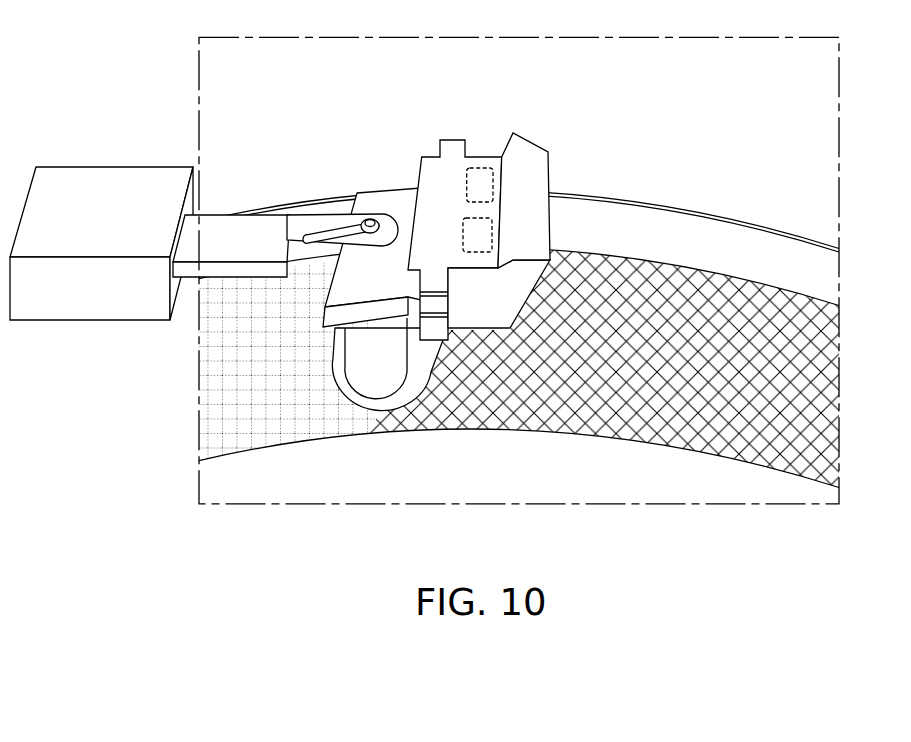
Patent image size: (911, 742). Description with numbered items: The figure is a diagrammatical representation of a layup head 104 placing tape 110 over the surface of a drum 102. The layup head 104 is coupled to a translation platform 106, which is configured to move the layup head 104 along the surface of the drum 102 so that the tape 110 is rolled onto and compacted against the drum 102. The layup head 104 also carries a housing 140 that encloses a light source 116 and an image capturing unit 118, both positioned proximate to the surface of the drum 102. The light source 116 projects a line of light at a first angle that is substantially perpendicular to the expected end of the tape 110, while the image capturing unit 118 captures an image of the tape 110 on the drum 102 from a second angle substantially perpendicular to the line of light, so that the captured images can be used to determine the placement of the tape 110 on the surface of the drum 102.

The drum 102 is at (707, 223).
The layup head 104 is at (374, 176).
The translation platform 106 is at (100, 165).
The tape 110 is at (200, 405).
The light source 116 is at (498, 214).
The image capturing unit 118 is at (480, 172).
The housing 140 is at (440, 138).